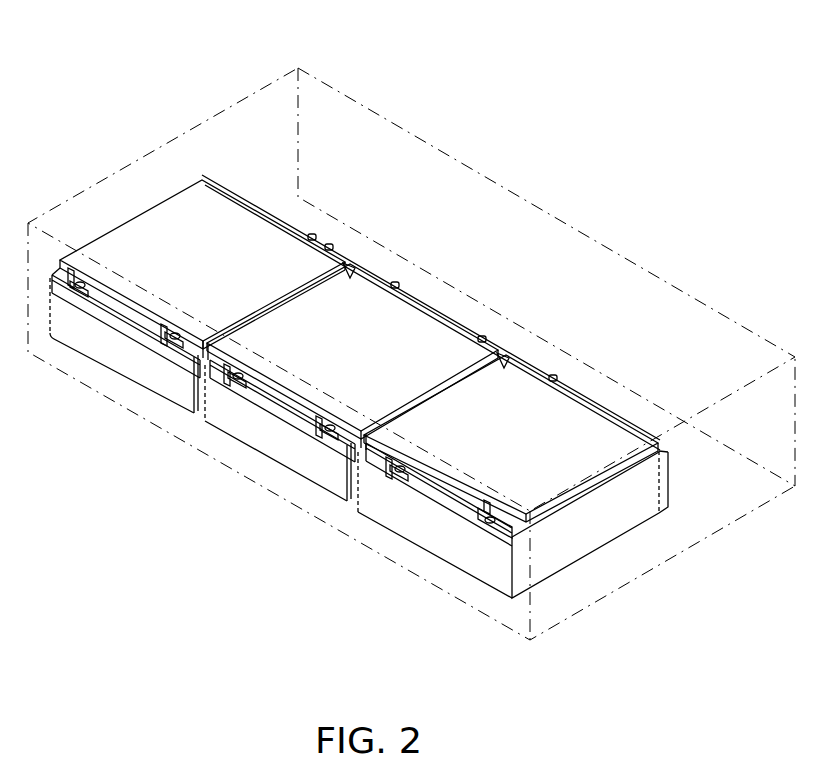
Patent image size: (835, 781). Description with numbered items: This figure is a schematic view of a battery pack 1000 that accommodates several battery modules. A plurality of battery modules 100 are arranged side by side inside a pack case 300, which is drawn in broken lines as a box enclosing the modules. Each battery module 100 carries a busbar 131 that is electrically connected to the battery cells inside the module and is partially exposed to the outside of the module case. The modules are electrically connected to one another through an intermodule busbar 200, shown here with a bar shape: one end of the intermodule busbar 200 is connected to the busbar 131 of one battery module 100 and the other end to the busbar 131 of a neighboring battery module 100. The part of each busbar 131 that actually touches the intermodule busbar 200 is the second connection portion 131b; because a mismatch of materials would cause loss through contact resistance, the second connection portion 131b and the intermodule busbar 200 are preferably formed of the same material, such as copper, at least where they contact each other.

The battery pack 1000 is at (212, 38).
The pack case 300 is at (150, 152).
The battery module 100 is at (220, 265).
The intermodule busbar 200 is at (202, 421).
The busbar 131 is at (78, 296).
The second connection portion 131b is at (252, 476).